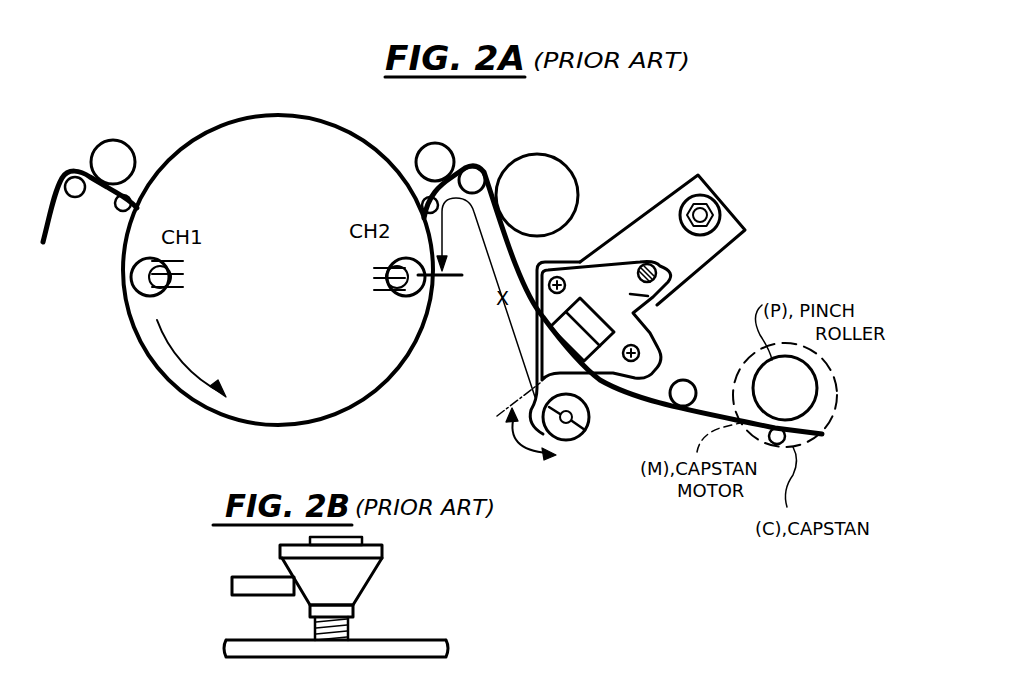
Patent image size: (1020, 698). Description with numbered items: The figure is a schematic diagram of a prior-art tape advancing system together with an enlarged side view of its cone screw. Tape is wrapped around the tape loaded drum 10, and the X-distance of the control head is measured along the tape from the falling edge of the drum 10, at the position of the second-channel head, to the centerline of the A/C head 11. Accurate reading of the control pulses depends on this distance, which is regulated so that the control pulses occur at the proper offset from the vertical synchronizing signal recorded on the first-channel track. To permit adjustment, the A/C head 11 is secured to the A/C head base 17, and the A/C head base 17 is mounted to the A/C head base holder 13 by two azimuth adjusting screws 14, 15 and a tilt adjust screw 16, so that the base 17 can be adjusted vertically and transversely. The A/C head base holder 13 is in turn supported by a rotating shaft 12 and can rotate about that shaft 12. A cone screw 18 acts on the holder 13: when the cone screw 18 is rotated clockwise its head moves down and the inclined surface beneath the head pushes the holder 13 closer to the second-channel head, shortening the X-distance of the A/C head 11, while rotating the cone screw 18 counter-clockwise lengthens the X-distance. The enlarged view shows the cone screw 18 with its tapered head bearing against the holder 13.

In FIG. 2A, the tape loaded drum 10 is at (317, 138).
In FIG. 2A, the A/C head 11 is at (572, 338).
In FIG. 2A, the rotating shaft 12 is at (700, 206).
In FIG. 2A, the A/C head base holder 13 is at (712, 257).
In FIG. 2B, the A/C head base holder 13 is at (232, 585).
In FIG. 2A, the azimuth adjusting screw 14 is at (557, 277).
In FIG. 2A, the azimuth adjusting screw 15 is at (640, 353).
In FIG. 2A, the tilt adjust screw 16 is at (647, 264).
In FIG. 2A, the A/C head base 17 is at (660, 306).
In FIG. 2A, the cone screw 18 is at (588, 417).
In FIG. 2B, the cone screw 18 is at (378, 549).